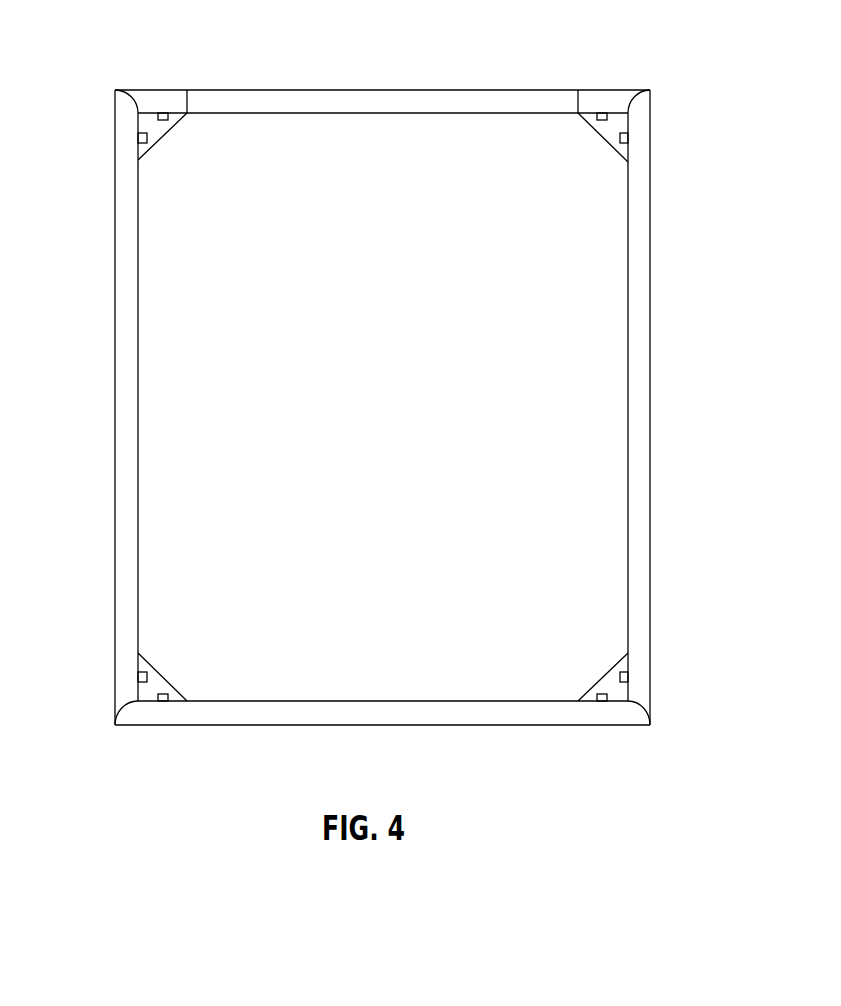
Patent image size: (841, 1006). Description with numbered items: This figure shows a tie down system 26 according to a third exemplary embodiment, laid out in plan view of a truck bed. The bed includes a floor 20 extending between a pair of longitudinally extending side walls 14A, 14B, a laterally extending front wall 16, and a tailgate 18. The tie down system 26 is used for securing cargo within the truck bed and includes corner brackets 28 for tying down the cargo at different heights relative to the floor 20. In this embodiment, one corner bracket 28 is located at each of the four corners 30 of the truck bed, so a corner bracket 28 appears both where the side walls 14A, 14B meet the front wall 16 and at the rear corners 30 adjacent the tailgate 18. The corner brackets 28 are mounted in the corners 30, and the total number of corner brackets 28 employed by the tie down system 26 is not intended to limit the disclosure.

The side wall 14A is at (652, 408).
The side wall 14B is at (115, 408).
The front wall 16 is at (382, 702).
The tailgate 18 is at (438, 102).
The floor 20 is at (398, 421).
The tie down system 26 is at (160, 98).
The corner bracket 28 is at (163, 135).
The corner 30 is at (115, 90).